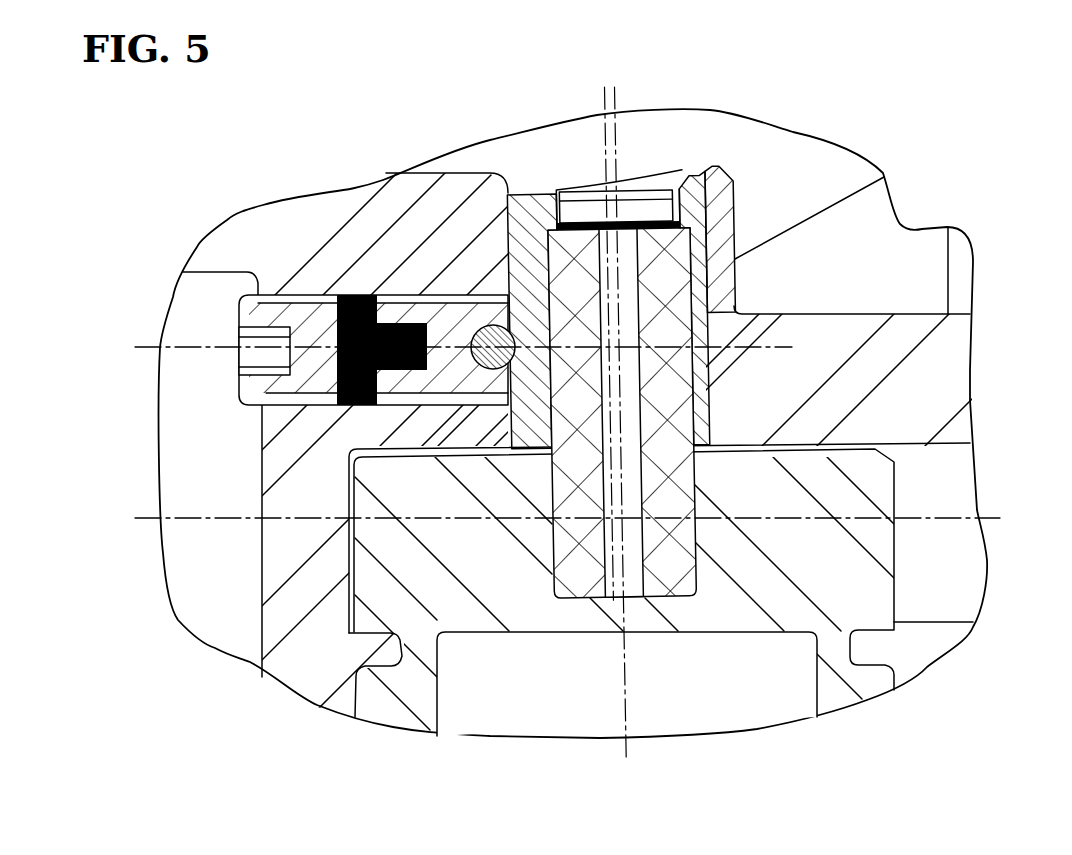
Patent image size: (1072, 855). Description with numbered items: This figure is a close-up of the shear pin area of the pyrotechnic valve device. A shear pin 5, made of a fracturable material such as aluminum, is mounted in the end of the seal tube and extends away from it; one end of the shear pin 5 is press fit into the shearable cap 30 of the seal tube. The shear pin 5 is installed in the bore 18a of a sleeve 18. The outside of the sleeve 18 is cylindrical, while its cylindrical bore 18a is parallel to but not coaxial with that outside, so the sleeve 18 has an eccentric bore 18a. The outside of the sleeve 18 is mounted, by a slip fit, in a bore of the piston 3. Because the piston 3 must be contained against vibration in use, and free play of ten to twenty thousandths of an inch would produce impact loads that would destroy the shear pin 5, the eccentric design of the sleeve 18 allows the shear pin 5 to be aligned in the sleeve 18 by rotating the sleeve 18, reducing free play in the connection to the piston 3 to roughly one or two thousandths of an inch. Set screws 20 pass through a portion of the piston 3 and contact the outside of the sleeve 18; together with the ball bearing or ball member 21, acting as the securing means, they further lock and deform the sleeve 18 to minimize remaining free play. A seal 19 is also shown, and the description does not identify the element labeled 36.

The piston 3 is at (917, 323).
The shear pin 5 is at (733, 235).
The sleeve 18 is at (663, 193).
The bore 18a is at (537, 285).
The seal 19 is at (350, 400).
The set screws 20 is at (397, 290).
The ball bearing or ball member 21 is at (485, 392).
The shearable cap 30 is at (894, 492).
The bushing 36 is at (712, 313).